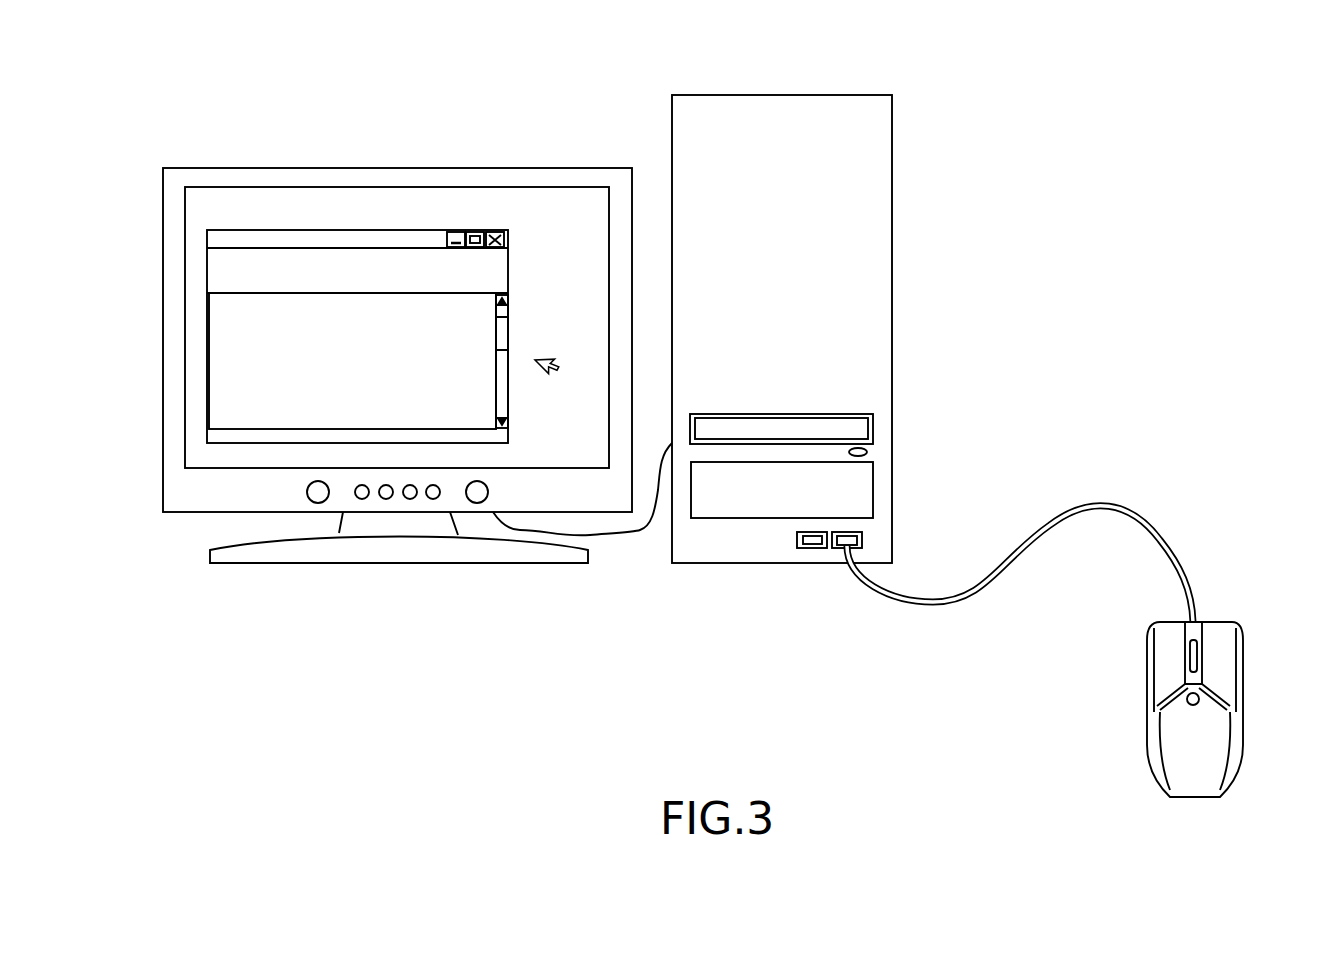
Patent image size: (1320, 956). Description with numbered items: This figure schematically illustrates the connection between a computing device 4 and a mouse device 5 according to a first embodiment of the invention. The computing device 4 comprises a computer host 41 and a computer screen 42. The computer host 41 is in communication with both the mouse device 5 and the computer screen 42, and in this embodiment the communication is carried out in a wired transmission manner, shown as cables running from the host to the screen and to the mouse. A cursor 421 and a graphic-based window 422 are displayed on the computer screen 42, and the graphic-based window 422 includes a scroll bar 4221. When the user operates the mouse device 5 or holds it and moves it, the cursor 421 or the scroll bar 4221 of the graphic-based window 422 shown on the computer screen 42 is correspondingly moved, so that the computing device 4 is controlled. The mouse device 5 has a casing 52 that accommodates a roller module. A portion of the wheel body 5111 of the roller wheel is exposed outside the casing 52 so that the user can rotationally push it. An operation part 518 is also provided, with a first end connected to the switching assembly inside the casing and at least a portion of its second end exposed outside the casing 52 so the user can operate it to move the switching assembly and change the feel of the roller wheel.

The computing device 4 is at (932, 329).
The computer host 41 is at (795, 110).
The computer screen 42 is at (527, 172).
The cursor 421 is at (558, 382).
The graphic-based window 422 is at (337, 272).
The scroll bar 4221 is at (502, 335).
The mouse device 5 is at (1186, 692).
The casing 52 is at (1213, 755).
The operation part 518 is at (1180, 700).
The wheel body 5111 is at (1195, 660).